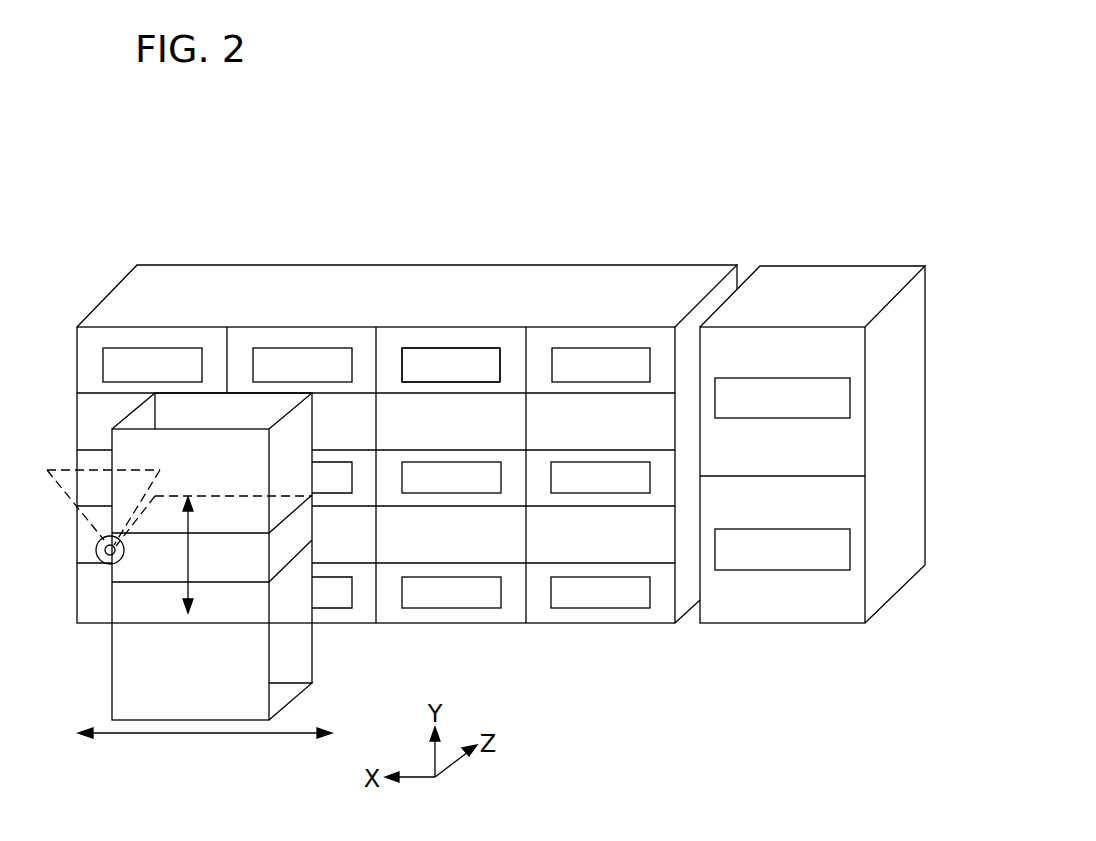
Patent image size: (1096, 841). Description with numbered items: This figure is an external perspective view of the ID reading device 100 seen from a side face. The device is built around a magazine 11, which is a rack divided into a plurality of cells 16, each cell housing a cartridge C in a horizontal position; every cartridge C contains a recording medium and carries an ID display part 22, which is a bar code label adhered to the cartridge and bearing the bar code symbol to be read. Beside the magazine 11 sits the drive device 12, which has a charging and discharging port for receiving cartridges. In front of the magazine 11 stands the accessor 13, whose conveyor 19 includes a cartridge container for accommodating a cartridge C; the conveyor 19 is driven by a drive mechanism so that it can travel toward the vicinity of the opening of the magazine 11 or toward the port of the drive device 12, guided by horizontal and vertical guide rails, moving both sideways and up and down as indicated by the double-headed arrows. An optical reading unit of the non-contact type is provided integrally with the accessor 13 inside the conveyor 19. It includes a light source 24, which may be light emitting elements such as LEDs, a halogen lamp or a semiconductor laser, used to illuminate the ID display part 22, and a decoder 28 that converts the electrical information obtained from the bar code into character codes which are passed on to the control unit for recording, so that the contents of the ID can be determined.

The ID reading device 100 is at (733, 158).
The magazine 11 is at (157, 265).
The drive device 12 is at (780, 273).
The cells 16 is at (194, 328).
The ID display part 22 is at (125, 362).
The cartridge C is at (498, 345).
The conveyor 19 is at (242, 570).
The accessor 13 is at (315, 658).
The light source 24 is at (123, 557).
The decoder 28 is at (105, 565).